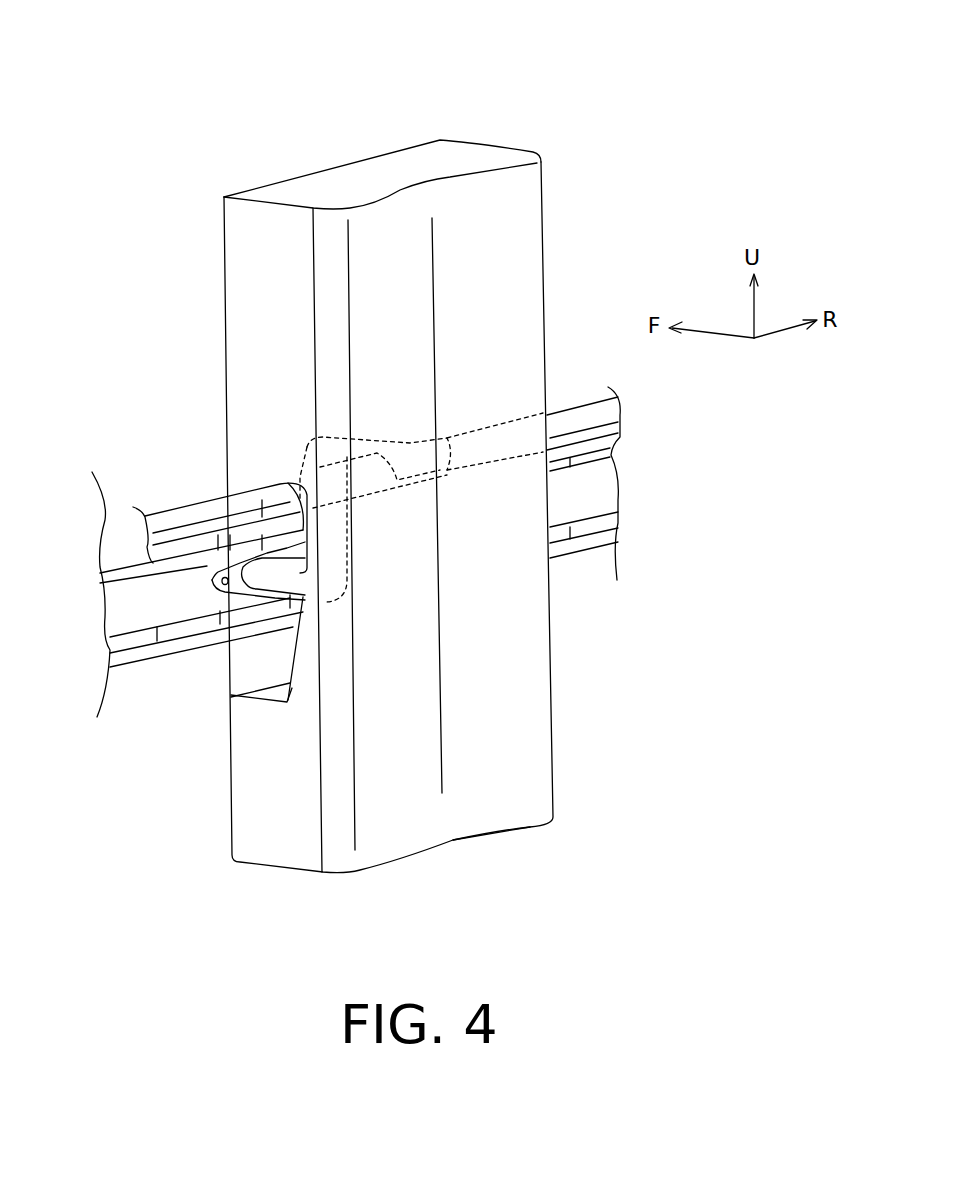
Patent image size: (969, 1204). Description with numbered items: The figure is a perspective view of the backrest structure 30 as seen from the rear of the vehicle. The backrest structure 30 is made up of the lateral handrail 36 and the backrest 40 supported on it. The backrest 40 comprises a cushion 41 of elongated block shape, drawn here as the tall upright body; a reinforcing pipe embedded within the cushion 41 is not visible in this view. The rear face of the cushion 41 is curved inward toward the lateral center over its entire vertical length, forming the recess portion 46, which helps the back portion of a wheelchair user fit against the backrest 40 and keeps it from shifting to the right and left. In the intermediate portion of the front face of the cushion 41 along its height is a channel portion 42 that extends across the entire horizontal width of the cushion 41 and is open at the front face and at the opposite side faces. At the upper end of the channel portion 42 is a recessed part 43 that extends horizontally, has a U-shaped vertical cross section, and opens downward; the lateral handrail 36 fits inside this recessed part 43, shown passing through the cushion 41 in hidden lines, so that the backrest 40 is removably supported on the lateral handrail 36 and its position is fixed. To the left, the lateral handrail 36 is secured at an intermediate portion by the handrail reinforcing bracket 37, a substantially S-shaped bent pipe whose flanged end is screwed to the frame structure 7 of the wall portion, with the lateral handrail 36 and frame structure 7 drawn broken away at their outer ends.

The backrest structure 30 is at (488, 137).
The backrest 40 is at (543, 192).
The recess portion 46 is at (433, 207).
The cushion 41 is at (518, 753).
The channel portion 42 is at (290, 648).
The recessed part 43 is at (308, 532).
The lateral handrail 36 is at (175, 513).
The frame structure 7 is at (163, 598).
The handrail reinforcing bracket 37 is at (280, 583).